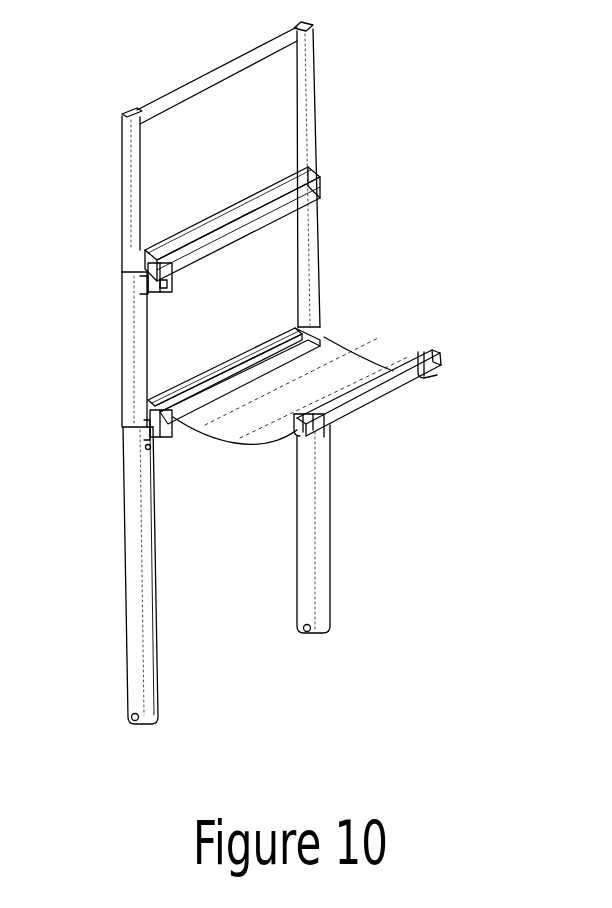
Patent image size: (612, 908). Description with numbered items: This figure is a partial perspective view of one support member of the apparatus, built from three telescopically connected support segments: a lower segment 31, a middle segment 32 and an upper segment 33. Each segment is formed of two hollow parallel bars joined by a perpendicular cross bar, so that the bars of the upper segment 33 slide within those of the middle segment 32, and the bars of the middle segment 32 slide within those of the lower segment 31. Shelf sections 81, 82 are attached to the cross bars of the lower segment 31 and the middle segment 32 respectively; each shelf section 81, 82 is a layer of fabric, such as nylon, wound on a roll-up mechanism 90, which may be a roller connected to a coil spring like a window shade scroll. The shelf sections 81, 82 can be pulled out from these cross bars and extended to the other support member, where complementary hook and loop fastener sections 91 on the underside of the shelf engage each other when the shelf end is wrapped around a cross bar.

The lower segment 31 is at (140, 480).
The middle segment 32 is at (305, 232).
The upper segment 33 is at (130, 164).
The shelf section 81 is at (303, 359).
The shelf section 82 is at (305, 190).
The roll-up mechanism 90 is at (157, 277).
The section of hook fastener 91 is at (313, 422).